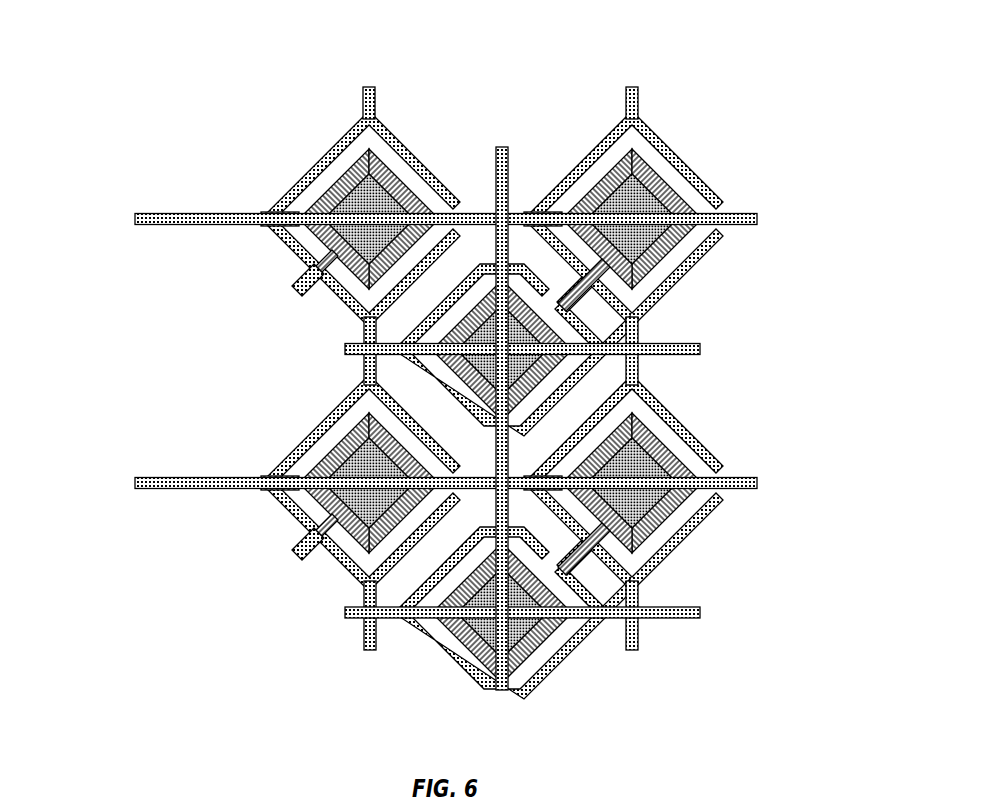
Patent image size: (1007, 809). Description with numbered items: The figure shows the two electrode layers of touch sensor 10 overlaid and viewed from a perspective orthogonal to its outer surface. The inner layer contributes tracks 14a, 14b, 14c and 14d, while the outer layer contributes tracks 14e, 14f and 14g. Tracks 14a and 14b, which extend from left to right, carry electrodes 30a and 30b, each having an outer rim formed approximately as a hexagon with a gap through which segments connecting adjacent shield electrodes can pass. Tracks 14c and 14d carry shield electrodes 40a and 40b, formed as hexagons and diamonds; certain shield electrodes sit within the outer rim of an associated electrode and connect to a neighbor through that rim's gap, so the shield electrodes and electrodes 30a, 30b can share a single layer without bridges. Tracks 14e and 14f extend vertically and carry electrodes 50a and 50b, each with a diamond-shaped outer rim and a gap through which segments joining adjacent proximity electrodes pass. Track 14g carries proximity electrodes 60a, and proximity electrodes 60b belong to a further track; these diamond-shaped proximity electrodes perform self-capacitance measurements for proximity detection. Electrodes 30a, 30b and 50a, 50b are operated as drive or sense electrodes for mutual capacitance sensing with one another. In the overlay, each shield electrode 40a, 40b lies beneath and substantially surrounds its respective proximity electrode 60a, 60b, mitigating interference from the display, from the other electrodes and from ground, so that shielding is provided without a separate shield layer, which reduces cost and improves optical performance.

The touch sensor 10 is at (419, 373).
The track 14a is at (737, 349).
The track 14b is at (737, 612).
The track 14c is at (101, 219).
The track 14d is at (101, 484).
The track 14e is at (370, 77).
The track 14f is at (632, 77).
The track 14g is at (501, 77).
The electrode 30a is at (443, 301).
The electrode 30b is at (408, 628).
The shield electrode 40a is at (393, 176).
The shield electrode 40b is at (678, 459).
The electrode 50a is at (300, 180).
The electrode 50b is at (585, 158).
The proximity electrode 60a is at (348, 214).
The proximity electrode 60b is at (650, 245).